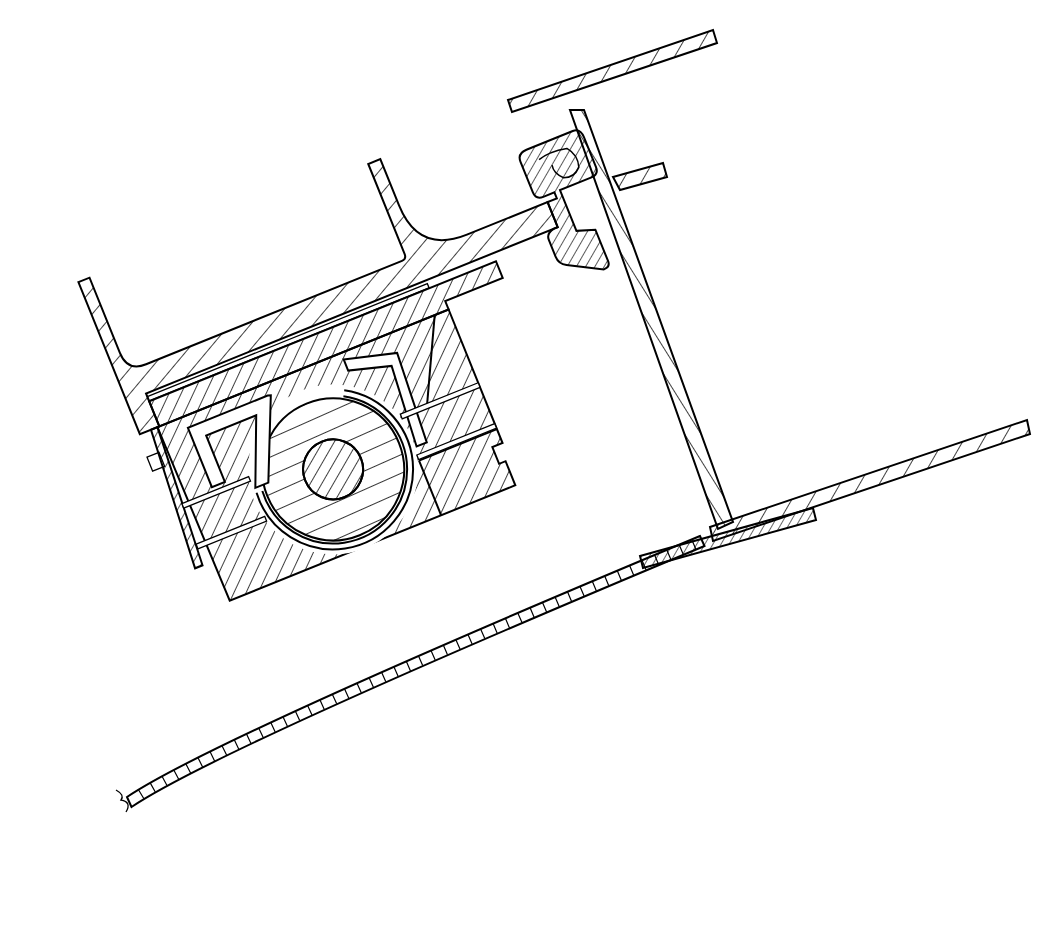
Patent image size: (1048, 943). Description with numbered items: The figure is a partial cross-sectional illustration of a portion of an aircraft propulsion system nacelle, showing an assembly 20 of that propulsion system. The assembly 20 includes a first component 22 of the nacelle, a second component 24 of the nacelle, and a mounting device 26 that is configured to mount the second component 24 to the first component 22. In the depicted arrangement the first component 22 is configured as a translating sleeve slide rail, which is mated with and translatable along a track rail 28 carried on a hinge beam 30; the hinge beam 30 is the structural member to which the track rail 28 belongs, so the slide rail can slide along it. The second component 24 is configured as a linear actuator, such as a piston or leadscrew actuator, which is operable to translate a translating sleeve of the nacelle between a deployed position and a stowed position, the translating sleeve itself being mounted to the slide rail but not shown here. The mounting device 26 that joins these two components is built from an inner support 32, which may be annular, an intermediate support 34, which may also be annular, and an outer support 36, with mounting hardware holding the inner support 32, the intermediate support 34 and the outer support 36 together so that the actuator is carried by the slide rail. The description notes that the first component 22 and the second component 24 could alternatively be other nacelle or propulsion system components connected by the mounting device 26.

The assembly 20 is at (144, 190).
The first component 22 is at (349, 275).
The second component 24 is at (318, 542).
The mounting device 26 is at (194, 577).
The track rail 28 is at (530, 156).
The hinge beam 30 is at (670, 322).
The inner support 32 is at (415, 515).
The intermediate support 34 is at (466, 512).
The outer support 36 is at (507, 485).